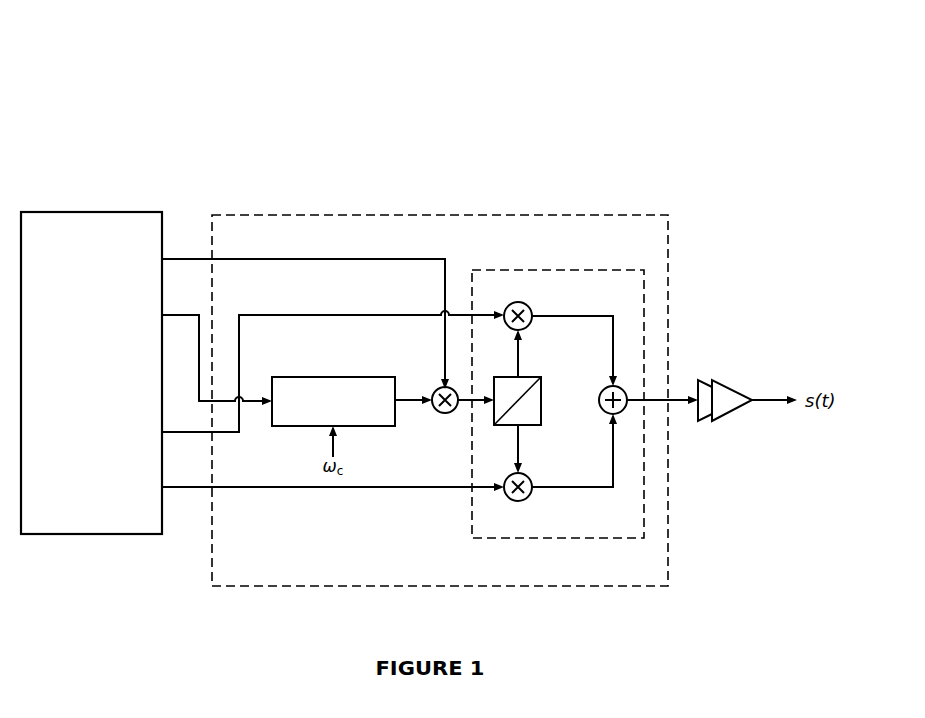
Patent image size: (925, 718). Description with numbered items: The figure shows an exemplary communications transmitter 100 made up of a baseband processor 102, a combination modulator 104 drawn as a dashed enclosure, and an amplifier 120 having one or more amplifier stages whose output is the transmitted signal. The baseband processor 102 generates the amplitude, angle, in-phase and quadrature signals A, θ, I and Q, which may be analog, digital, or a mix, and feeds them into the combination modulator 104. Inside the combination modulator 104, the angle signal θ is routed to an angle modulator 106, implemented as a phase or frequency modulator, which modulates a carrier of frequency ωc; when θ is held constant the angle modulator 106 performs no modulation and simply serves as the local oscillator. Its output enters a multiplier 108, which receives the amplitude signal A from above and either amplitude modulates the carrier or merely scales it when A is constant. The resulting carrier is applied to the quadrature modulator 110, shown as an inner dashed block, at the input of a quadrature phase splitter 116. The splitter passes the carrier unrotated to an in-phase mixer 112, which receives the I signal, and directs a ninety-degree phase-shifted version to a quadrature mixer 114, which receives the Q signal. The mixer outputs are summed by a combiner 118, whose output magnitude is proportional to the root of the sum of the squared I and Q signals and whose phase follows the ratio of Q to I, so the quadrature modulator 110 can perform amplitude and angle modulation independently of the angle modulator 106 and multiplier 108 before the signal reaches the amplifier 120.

The communications transmitter 100 is at (112, 80).
The baseband processor 102 is at (163, 210).
The combination modulator 104 is at (512, 215).
The angle modulator 106 is at (337, 374).
The multiplier 108 is at (438, 420).
The quadrature modulator 110 is at (565, 268).
The in-phase mixer 112 is at (530, 304).
The quadrature mixer 114 is at (528, 500).
The quadrature phase splitter 116 is at (545, 376).
The combiner 118 is at (597, 413).
The amplifier 120 is at (698, 365).